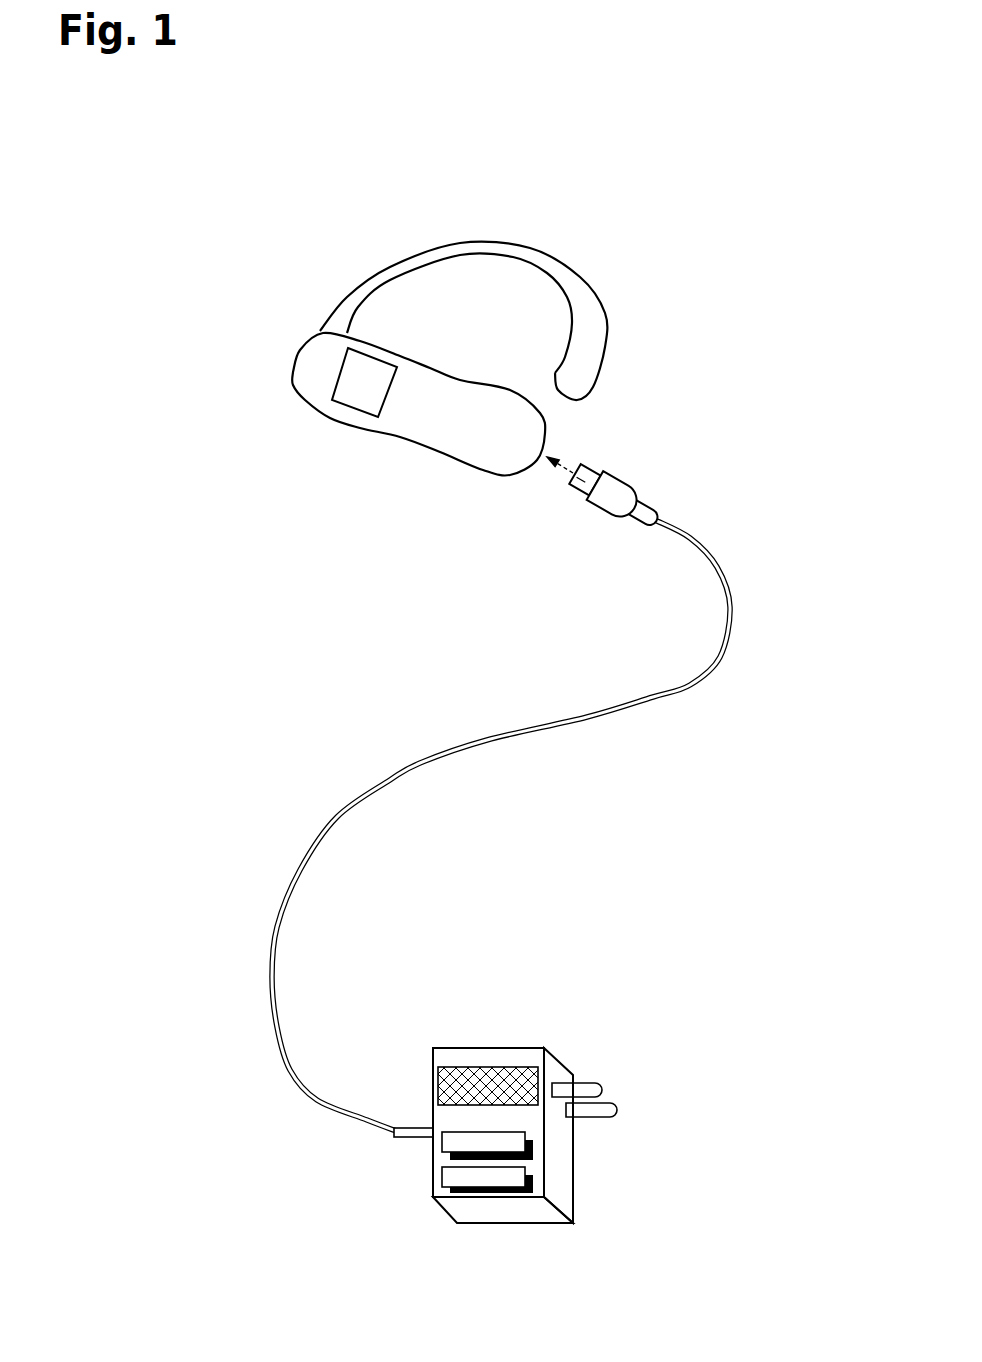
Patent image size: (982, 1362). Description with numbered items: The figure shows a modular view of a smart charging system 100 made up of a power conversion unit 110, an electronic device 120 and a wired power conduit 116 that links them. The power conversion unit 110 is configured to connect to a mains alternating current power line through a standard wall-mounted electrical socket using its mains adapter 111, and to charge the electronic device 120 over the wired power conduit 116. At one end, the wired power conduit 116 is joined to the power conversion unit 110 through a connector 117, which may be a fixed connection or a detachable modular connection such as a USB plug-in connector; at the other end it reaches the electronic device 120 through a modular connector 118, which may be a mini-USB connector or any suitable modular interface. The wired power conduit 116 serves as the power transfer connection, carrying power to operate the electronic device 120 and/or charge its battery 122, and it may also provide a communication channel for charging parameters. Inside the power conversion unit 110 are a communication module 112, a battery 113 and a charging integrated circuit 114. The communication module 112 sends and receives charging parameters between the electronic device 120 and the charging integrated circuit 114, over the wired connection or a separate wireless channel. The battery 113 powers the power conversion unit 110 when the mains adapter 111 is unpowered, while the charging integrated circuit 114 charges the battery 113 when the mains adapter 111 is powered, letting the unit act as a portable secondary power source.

The smart charging system 100 is at (774, 162).
The power conversion unit 110 is at (525, 1106).
The mains adapter 111 is at (558, 1117).
The communication module 112 is at (443, 1146).
The battery 113 is at (452, 1067).
The charging integrated circuit 114 is at (507, 1178).
The wired power conduit 116 is at (485, 743).
The connector 117 is at (413, 1129).
The modular connector 118 is at (583, 497).
The electronic device 120 is at (449, 367).
The battery 122 is at (373, 383).